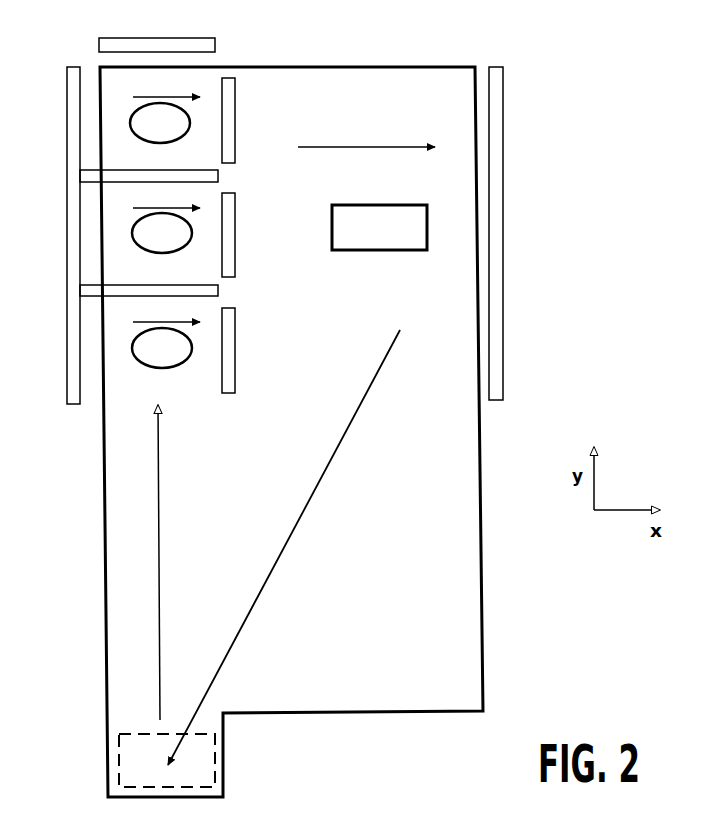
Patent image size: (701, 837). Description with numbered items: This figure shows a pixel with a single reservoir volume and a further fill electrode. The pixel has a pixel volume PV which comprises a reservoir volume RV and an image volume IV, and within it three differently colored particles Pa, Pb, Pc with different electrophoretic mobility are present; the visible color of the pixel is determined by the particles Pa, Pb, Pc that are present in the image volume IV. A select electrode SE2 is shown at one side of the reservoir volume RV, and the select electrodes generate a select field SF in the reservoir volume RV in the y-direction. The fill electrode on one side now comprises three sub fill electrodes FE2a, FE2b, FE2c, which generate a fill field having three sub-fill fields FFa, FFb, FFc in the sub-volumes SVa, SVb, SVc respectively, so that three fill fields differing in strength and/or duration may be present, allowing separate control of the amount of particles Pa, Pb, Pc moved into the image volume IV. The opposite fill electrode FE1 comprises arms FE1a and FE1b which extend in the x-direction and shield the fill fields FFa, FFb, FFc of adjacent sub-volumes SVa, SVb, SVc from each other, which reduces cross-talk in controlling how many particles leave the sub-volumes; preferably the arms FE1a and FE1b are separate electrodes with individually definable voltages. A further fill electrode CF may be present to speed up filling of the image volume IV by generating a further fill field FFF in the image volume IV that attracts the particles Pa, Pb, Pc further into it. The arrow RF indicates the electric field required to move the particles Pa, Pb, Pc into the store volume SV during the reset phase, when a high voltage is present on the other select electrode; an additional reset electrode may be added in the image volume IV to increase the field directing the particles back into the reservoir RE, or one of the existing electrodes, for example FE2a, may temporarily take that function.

The select electrode SE2 is at (83, 772).
The image volume IV is at (416, 77).
The further fill electrode CF is at (500, 77).
The pixel volume PV is at (465, 432).
The reservoir volume RV is at (120, 520).
The fill electrode FE1 is at (46, 235).
The arm of fill electrode FE1a is at (218, 291).
The arm of fill electrode FE1b is at (218, 176).
The sub fill electrode FE2a is at (235, 357).
The sub fill electrode FE2b is at (235, 247).
The sub fill electrode FE2c is at (235, 117).
The sub-fill field FFa is at (166, 311).
The sub-fill field FFb is at (166, 197).
The sub-fill field FFc is at (166, 86).
The further fill field FFF is at (366, 133).
The particle Pa is at (162, 348).
The particle Pb is at (162, 233).
The particle Pc is at (160, 123).
The sub-volume SVa is at (143, 385).
The sub-volume SVb is at (143, 268).
The sub-volume SVc is at (143, 156).
The reservoir RE is at (371, 212).
The select electric field SF is at (175, 562).
The reset field arrow RF is at (284, 547).
The store volume SV is at (153, 765).